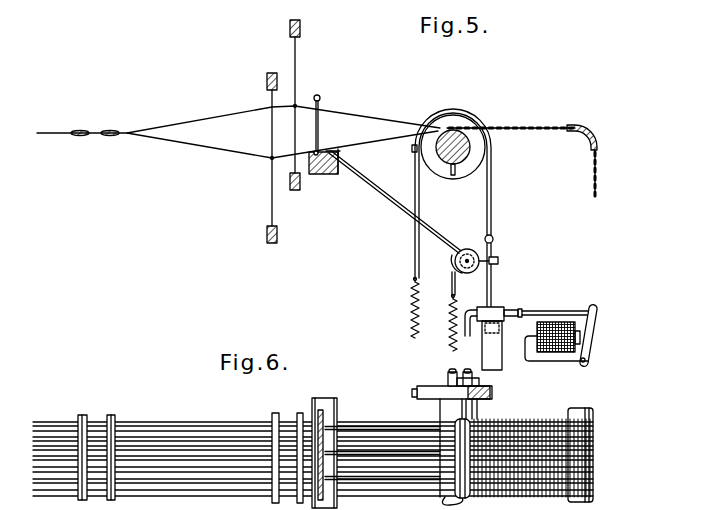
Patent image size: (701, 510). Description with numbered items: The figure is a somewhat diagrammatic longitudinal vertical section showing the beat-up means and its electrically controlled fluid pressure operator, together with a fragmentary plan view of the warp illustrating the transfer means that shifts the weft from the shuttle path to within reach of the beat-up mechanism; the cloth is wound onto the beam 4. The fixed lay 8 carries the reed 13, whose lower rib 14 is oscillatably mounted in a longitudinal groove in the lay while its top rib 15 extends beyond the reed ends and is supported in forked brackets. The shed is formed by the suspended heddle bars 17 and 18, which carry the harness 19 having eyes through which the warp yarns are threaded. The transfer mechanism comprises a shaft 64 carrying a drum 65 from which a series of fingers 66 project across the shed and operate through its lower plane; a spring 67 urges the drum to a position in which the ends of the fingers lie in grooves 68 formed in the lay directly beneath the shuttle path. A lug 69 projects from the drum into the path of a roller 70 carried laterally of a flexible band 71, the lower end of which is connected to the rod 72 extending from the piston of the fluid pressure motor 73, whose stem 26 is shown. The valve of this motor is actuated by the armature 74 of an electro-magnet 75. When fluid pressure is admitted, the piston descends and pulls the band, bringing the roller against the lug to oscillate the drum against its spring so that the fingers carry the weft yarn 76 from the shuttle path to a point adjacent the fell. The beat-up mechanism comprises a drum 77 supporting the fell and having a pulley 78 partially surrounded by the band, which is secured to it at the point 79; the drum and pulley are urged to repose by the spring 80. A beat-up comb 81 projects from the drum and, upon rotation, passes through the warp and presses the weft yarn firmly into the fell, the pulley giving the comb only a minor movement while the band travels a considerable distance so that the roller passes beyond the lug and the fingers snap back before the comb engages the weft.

In FIG. 5, the cloth beam 4 is at (593, 133).
In FIG. 6, the cloth beam 4 is at (594, 413).
In FIG. 5, the lay 8 is at (338, 175).
In FIG. 6, the lay 8 is at (328, 398).
In FIG. 5, the reed 13 is at (319, 120).
In FIG. 6, the reed 13 is at (325, 419).
In FIG. 5, the lower rib 14 is at (320, 175).
In FIG. 5, the top rib 15 is at (321, 96).
In FIG. 5, the heddle bar 17 is at (264, 84).
In FIG. 6, the heddle bar 17 is at (274, 411).
In FIG. 5, the heddle bar 18 is at (300, 28).
In FIG. 6, the heddle bar 18 is at (299, 411).
In FIG. 5, the harness 19 is at (270, 196).
In FIG. 5, the valve stem 26 is at (502, 328).
In FIG. 5, the shaft 64 is at (462, 270).
In FIG. 5, the drum 65 is at (467, 249).
In FIG. 5, the fingers 66 is at (386, 196).
In FIG. 6, the fingers 66 is at (379, 451).
In FIG. 5, the spring 67 is at (449, 340).
In FIG. 5, the grooves 68 is at (341, 153).
In FIG. 5, the lug 69 is at (499, 261).
In FIG. 5, the roller 70 is at (493, 236).
In FIG. 5, the flexible band 71 is at (455, 111).
In FIG. 6, the flexible band 71 is at (428, 391).
In FIG. 5, the rod 72 is at (492, 306).
In FIG. 5, the fluid pressure motor 73 is at (497, 361).
In FIG. 5, the armature 74 is at (600, 337).
In FIG. 5, the electro-magnet 75 is at (555, 322).
In FIG. 5, the weft yarn 76 is at (332, 151).
In FIG. 5, the drum 77 is at (481, 127).
In FIG. 6, the drum 77 is at (445, 412).
In FIG. 5, the pulley 78 is at (437, 118).
In FIG. 6, the pulley 78 is at (418, 387).
In FIG. 5, the point 79 is at (411, 151).
In FIG. 6, the point 79 is at (411, 392).
In FIG. 5, the spring 80 is at (410, 296).
In FIG. 5, the beat-up comb 81 is at (457, 172).